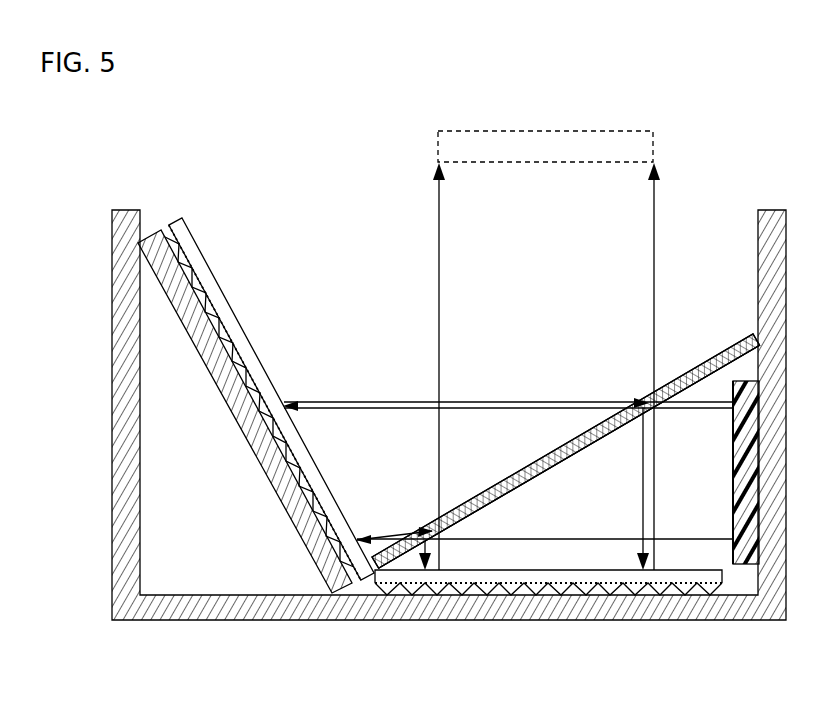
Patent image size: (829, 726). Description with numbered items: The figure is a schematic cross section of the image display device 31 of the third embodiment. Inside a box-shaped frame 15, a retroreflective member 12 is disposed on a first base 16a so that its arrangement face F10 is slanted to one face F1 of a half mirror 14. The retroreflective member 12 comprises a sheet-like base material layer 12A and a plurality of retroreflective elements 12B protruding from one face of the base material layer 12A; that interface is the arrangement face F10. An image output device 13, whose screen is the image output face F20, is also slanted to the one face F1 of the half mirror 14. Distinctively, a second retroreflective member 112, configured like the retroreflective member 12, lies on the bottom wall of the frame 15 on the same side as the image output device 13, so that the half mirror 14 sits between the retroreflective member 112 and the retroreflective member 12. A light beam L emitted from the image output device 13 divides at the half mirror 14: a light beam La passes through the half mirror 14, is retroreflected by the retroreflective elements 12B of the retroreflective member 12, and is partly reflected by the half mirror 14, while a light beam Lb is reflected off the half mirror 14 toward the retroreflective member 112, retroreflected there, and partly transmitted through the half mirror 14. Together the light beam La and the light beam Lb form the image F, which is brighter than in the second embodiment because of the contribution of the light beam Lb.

The image display device 31 is at (266, 147).
The box-shaped frame 15 is at (112, 498).
The first base 16a is at (280, 480).
The retroreflective member 12 is at (280, 222).
The base material layer 12A is at (197, 258).
The retroreflective elements 12B is at (200, 285).
The arrangement face F10 is at (218, 313).
The second retroreflective member 112 is at (652, 670).
The half mirror 14 is at (663, 385).
The one face of the half mirror F1 is at (706, 380).
The image output device 13 is at (733, 495).
The image output face F20 is at (733, 488).
The image F is at (540, 130).
The light beam La is at (326, 407).
The light beam Lb is at (430, 560).
The light beam L is at (688, 409).